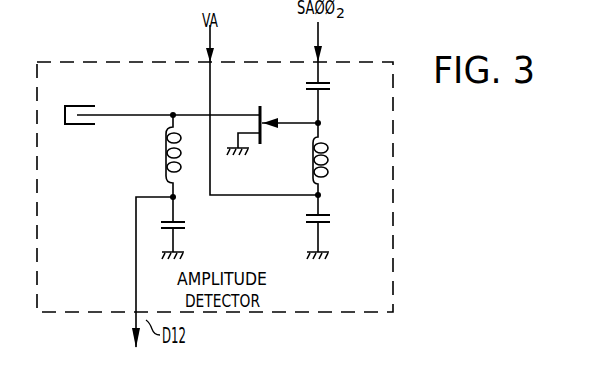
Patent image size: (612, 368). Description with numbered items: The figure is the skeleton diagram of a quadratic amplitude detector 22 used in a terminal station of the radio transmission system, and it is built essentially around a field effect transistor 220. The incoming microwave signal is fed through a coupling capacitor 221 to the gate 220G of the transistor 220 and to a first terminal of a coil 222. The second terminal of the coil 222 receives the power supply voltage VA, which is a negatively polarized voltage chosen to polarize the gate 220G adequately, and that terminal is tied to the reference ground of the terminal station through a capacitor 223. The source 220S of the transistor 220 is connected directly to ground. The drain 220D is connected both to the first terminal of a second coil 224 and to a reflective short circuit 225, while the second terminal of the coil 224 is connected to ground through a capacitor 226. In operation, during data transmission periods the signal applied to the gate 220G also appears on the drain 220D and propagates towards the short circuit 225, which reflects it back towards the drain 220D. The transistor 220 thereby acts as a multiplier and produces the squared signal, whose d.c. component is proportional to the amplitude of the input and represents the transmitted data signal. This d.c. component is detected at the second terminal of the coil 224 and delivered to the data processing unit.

The detector 22 is at (394, 138).
The transistor FET 220 is at (245, 105).
The drain 220D is at (232, 106).
The gate 220G is at (285, 125).
The source 220S is at (250, 144).
The coupling capacitor 221 is at (335, 84).
The coil 222 is at (330, 150).
The capacitor 223 is at (333, 219).
The coil 224 is at (167, 152).
The reflective short circuit 225 is at (80, 105).
The capacitor 226 is at (191, 223).